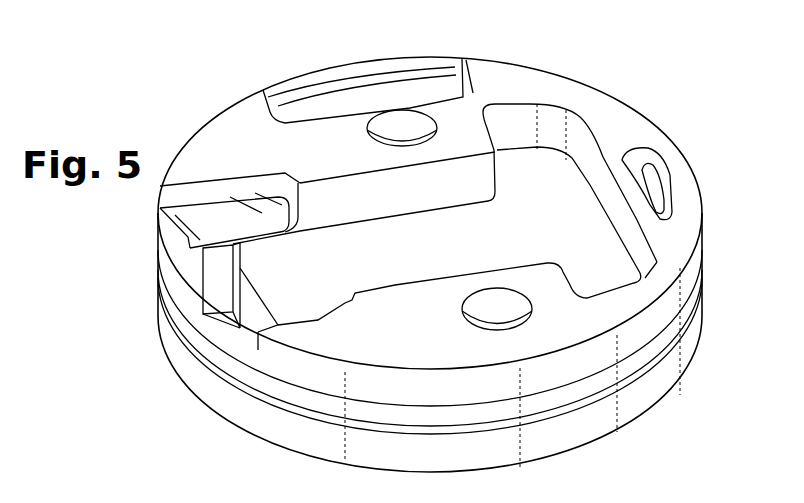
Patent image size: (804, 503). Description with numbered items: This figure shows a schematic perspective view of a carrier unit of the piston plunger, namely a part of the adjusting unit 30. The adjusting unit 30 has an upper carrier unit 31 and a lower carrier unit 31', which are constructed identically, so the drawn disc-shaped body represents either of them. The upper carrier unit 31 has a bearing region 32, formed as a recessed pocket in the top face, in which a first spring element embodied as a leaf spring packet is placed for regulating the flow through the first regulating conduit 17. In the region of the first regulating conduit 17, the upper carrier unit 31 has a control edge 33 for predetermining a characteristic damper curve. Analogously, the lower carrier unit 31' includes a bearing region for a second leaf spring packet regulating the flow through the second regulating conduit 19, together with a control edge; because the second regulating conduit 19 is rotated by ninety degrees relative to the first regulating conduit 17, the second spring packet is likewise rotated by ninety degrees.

The adjusting unit 30 is at (687, 73).
The upper carrier unit 31 is at (456, 328).
The lower carrier unit 31' is at (459, 352).
The bearing region 32 is at (532, 170).
The control edge 33 is at (181, 255).
The second regulating conduit 19 is at (357, 97).
The first regulating conduit 17 is at (220, 288).